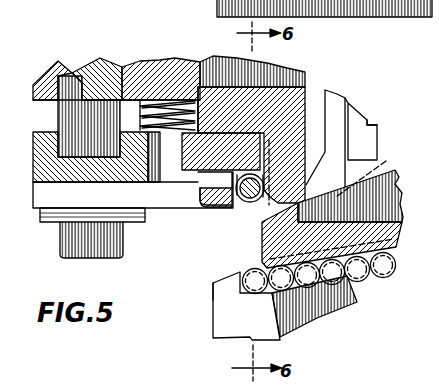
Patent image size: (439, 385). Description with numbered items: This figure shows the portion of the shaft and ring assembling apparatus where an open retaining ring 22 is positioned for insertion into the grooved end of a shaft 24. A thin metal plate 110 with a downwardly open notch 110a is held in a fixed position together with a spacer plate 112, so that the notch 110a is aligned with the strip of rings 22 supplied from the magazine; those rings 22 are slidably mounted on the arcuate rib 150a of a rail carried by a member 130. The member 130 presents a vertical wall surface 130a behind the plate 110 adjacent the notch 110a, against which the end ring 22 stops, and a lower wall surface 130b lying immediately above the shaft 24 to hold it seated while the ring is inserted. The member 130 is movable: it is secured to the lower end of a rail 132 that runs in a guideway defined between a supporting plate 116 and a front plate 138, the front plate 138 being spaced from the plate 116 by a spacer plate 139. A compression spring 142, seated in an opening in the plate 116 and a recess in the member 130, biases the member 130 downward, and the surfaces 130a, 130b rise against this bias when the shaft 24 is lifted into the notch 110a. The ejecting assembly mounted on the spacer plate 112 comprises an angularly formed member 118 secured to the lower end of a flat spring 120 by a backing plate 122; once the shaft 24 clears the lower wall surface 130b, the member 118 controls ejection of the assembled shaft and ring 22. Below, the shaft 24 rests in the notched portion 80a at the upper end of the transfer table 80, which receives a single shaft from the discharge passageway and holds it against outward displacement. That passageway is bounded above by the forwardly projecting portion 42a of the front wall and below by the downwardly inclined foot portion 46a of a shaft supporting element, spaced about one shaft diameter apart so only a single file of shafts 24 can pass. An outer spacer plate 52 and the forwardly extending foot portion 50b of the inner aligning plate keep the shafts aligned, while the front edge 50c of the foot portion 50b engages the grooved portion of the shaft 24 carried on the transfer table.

The front plate 138 is at (50, 72).
The spacer plate 139 is at (88, 60).
The supporting plate 116 is at (137, 65).
The compression springs 142 is at (160, 107).
The rail 132 is at (67, 117).
The spacer plate 112 is at (268, 65).
The thin metal plate 110 is at (298, 95).
The notch 110a is at (233, 192).
The open retaining ring 22 is at (270, 165).
The vertical wall surface 130a is at (238, 205).
The arcuate rib 150a is at (252, 203).
The lower wall surface 130b is at (183, 212).
The member 130 is at (33, 198).
The angularly formed member 118 is at (333, 98).
The flat spring 120 is at (350, 115).
The backing plate 122 is at (371, 128).
The forwardly projecting portion 42a is at (375, 171).
The outer plate 52 is at (398, 193).
The foot portion 50b is at (399, 228).
The front edge 50c is at (262, 250).
The shaft 24 is at (383, 266).
The transfer table 80 is at (214, 328).
The notched portion 80a is at (214, 300).
The foot portion 46a is at (336, 302).